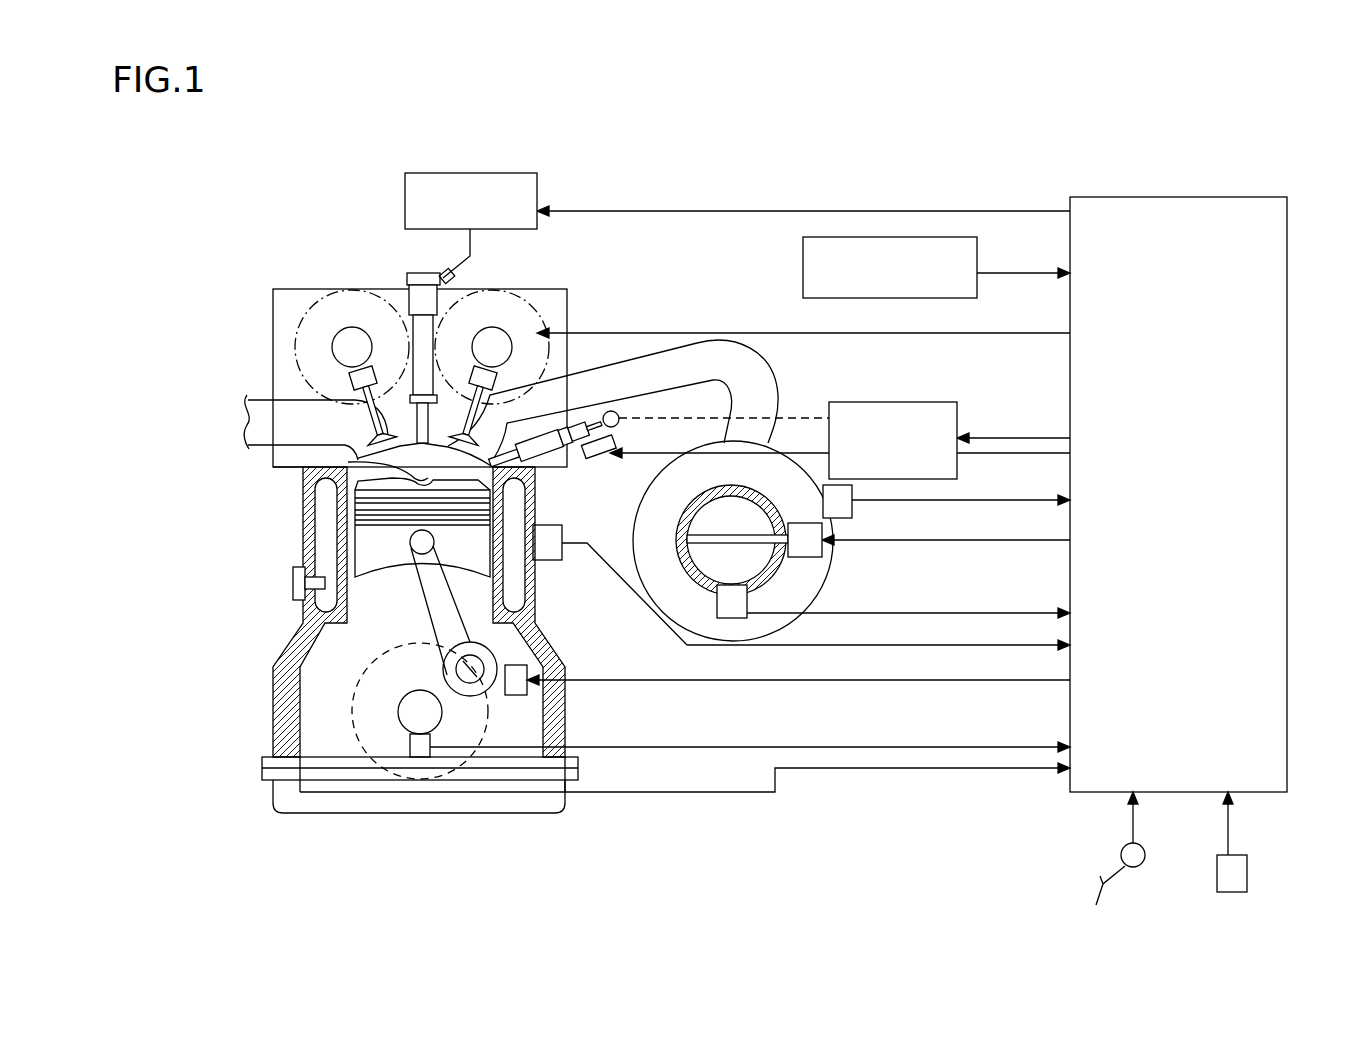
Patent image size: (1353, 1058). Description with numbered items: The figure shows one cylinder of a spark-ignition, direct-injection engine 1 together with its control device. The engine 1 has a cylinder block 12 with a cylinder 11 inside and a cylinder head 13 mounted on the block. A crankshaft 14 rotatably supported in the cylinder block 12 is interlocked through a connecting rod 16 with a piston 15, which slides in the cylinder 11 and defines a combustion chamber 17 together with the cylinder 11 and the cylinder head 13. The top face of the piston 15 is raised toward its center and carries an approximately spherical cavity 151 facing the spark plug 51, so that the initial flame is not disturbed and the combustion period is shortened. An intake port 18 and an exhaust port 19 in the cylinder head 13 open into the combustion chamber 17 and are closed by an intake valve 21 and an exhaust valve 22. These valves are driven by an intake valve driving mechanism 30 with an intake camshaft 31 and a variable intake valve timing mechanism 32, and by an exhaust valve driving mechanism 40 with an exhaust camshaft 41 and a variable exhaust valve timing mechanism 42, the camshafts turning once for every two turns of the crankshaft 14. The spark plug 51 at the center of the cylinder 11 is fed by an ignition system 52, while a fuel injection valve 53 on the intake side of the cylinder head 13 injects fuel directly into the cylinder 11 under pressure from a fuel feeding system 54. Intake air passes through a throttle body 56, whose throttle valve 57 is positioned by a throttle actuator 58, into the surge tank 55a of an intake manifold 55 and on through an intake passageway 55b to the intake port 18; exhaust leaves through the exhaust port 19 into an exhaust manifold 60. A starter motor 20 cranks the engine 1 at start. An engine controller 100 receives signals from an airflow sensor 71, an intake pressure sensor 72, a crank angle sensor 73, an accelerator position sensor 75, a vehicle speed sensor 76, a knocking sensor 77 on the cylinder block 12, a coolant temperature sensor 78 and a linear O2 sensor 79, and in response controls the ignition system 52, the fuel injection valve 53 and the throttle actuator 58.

The engine 1 is at (264, 226).
The cylinder 11 is at (328, 497).
The cylinder block 12 is at (567, 720).
The cylinder head 13 is at (300, 467).
The crankshaft 14 is at (407, 725).
The piston 15 is at (412, 562).
The connecting rod 16 is at (418, 608).
The combustion chamber 17 is at (454, 473).
The intake port 18 is at (534, 408).
The exhaust port 19 is at (284, 436).
The starter motor 20 is at (527, 668).
The intake valve 21 is at (478, 405).
The exhaust valve 22 is at (365, 405).
The intake valve driving mechanism 30 is at (498, 292).
The intake camshaft 31 is at (480, 360).
The variable intake valve timing mechanism 32 is at (463, 302).
The exhaust valve driving mechanism 40 is at (345, 295).
The exhaust camshaft 41 is at (340, 360).
The variable exhaust valve timing mechanism 42 is at (395, 290).
The spark plug 51 is at (413, 393).
The ignition system 52 is at (537, 190).
The fuel injection valve 53 is at (548, 468).
The fuel feeding system 54 is at (905, 402).
The intake manifold 55 is at (780, 403).
The surge tank 55a is at (750, 484).
The intake passageway 55b is at (688, 376).
The throttle body 56 is at (717, 592).
The throttle valve 57 is at (705, 556).
The throttle actuator 58 is at (817, 558).
The exhaust manifold 60 is at (252, 390).
The airflow sensor 71 is at (692, 636).
The intake pressure sensor 72 is at (843, 518).
The crank angle sensor 73 is at (408, 748).
The accelerator position sensor 75 is at (1121, 853).
The vehicle speed sensor 76 is at (1217, 872).
The knocking sensor 77 is at (547, 560).
The coolant temperature sensor 78 is at (293, 576).
The linear O2 sensor 79 is at (803, 272).
The engine controller 100 is at (1213, 197).
The cavity 151 is at (288, 463).